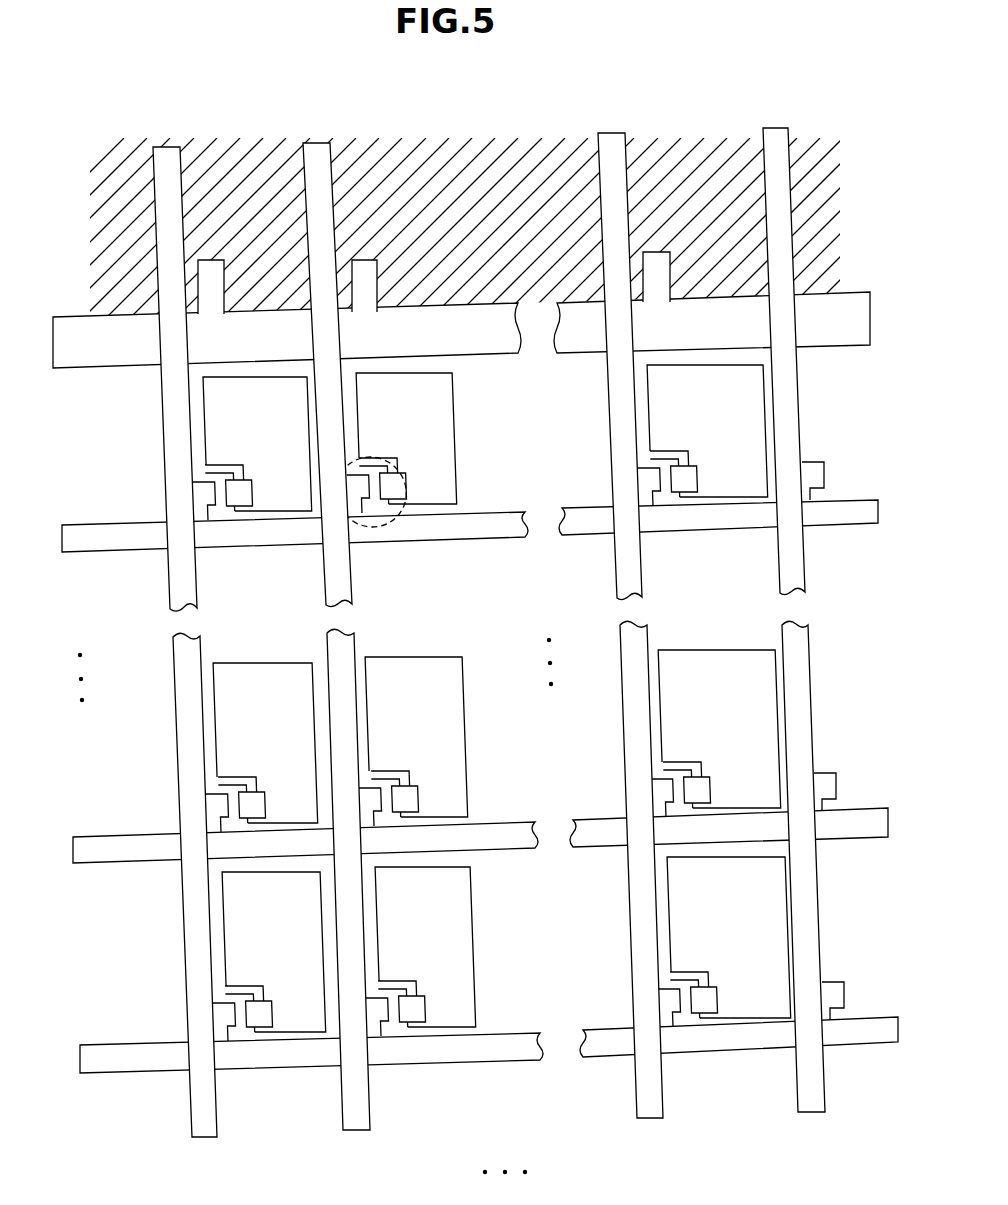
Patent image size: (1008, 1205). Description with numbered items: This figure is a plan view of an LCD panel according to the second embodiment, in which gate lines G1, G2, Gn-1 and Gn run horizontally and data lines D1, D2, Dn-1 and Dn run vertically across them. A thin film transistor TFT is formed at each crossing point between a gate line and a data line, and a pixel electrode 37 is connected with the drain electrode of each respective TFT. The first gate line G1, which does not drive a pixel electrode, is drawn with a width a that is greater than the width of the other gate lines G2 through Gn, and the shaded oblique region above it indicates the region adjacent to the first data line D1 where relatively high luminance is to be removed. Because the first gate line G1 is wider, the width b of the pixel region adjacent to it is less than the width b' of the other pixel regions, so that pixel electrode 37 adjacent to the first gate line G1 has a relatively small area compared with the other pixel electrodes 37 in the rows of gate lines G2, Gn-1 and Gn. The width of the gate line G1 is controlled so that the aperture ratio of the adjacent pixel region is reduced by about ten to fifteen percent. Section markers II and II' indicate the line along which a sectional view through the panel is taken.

The first gate line G1 is at (65, 317).
The second gate line G2 is at (73, 524).
The (n-1)th gate line Gn-1 is at (85, 838).
The nth gate line Gn is at (94, 1046).
The first data line D1 is at (210, 1118).
The second data line D2 is at (358, 1132).
The (n-1)th data line Dn-1 is at (650, 1118).
The nth data line Dn is at (812, 1112).
The pixel electrode 37 is at (400, 599).
The thin film transistor TFT is at (372, 526).
The width of the first gate line a is at (118, 297).
The width of the pixel region adjacent to the first gate line b is at (488, 436).
The width of the other pixel regions b' is at (501, 733).
The section line II is at (249, 101).
The section line II' is at (271, 594).